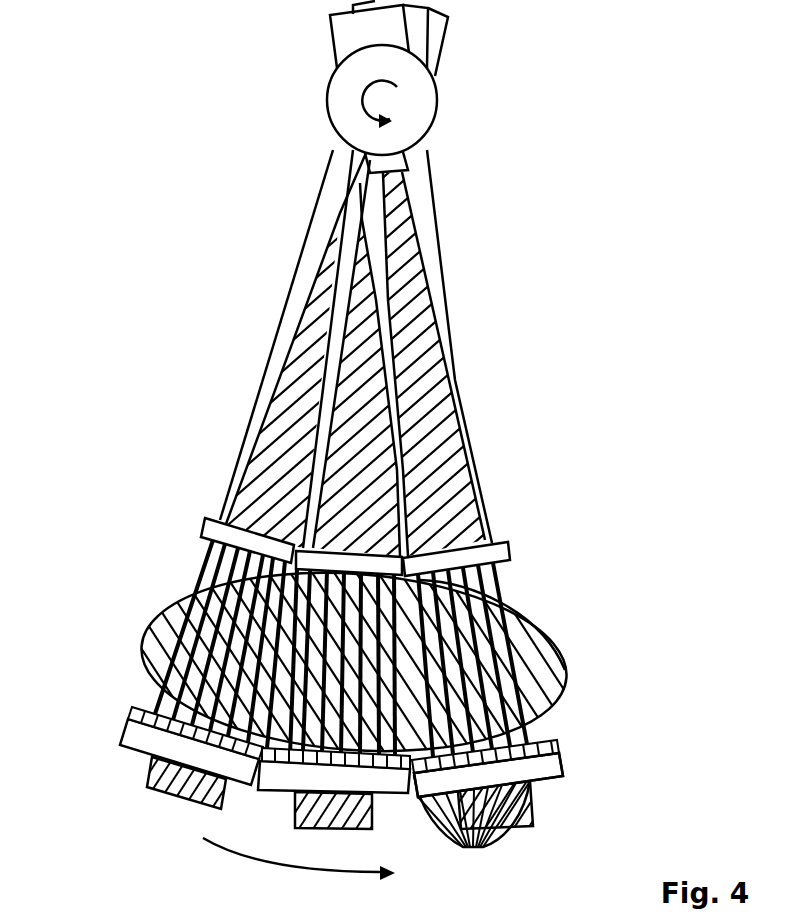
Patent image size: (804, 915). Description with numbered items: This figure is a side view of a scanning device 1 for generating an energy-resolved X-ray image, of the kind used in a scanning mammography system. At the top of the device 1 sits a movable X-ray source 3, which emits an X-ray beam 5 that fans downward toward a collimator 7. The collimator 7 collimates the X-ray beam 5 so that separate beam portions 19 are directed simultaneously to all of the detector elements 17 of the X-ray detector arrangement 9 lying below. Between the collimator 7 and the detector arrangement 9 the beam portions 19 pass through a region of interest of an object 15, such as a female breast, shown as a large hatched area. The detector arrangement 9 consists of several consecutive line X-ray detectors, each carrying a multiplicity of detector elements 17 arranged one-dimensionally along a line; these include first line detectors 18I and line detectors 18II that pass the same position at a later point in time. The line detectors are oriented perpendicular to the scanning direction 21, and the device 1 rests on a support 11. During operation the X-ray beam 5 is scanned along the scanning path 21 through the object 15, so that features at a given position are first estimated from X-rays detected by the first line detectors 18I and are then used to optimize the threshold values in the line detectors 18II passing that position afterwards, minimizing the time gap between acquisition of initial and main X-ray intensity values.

The device 1 is at (592, 172).
The X-ray source 3 is at (437, 105).
The X-ray beam 5 is at (435, 398).
The collimator 7 is at (503, 552).
The X-ray detector arrangement 9 is at (605, 770).
The support 11 is at (527, 823).
The object 15 is at (533, 651).
The detector elements 17 is at (563, 757).
The first line detectors 18I is at (537, 742).
The line detectors passing later 18II is at (472, 824).
The beam portions 19 is at (500, 598).
The scanning path 21 is at (225, 850).